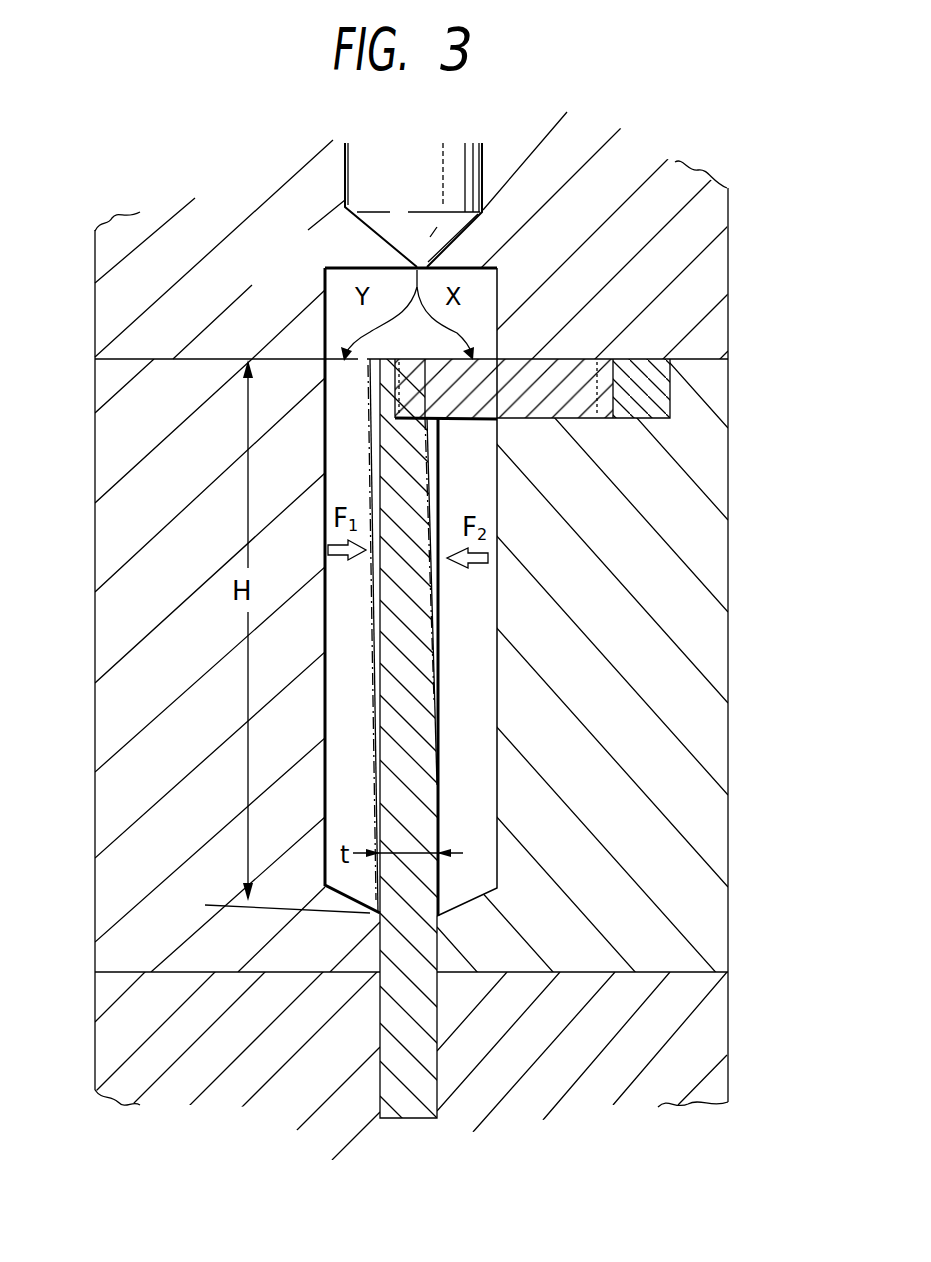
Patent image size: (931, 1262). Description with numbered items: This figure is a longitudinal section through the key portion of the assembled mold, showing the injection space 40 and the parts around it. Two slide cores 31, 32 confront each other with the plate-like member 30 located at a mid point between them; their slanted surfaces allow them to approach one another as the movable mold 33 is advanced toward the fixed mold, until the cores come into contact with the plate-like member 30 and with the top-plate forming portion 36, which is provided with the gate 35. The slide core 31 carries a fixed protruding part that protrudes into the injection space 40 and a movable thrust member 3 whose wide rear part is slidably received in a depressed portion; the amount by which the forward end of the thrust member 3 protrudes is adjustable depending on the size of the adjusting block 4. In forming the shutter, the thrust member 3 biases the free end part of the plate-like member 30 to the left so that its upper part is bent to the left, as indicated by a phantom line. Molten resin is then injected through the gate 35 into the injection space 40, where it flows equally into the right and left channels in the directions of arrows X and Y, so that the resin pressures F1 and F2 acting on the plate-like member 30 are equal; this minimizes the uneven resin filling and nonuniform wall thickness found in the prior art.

The thrust member 3 is at (566, 372).
The adjusting block 4 is at (665, 385).
The plate-like member 30 is at (418, 608).
The slide core 31 is at (707, 478).
The slide core 32 is at (117, 437).
The movable mold 33 is at (703, 1019).
The gate 35 is at (360, 237).
The top-plate forming portion 36 is at (705, 240).
The injection space 40 is at (335, 627).